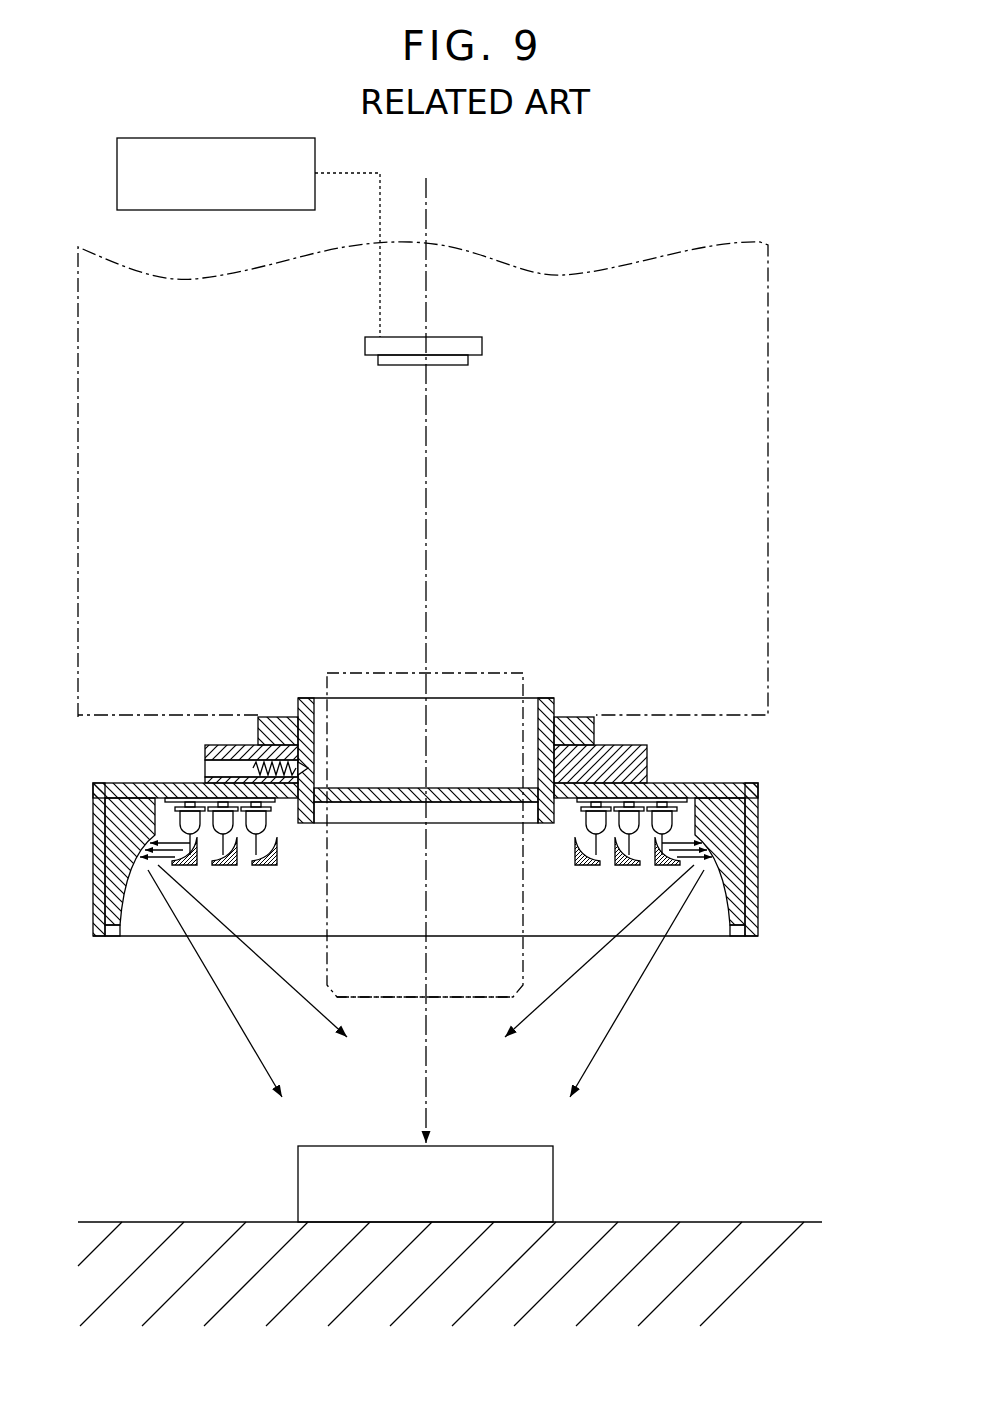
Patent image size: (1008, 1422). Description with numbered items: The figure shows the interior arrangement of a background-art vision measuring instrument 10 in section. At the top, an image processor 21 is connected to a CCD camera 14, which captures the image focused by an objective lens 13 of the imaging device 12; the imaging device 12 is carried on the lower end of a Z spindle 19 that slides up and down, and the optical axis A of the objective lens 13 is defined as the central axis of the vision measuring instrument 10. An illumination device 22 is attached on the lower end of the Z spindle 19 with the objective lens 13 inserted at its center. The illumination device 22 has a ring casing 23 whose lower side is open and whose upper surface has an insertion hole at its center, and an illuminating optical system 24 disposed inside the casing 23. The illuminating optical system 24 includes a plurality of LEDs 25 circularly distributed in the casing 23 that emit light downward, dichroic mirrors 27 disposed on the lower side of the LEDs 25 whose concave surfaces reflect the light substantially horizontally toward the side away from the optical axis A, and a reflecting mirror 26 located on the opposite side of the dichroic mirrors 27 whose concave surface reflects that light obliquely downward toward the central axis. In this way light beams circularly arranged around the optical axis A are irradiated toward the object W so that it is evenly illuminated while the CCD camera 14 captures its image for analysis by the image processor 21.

The vision measuring instrument 10 is at (486, 640).
The imaging device 12 is at (530, 648).
The objective lens 13 is at (487, 997).
The CCD camera 14 is at (482, 343).
The Z spindle 19 is at (768, 440).
The image processor 21 is at (212, 138).
The illumination device 22 is at (476, 897).
The ring casing 23 is at (752, 818).
The illuminating optical system 24 is at (426, 947).
The LEDs 25 is at (582, 818).
The reflecting mirror 26 is at (730, 900).
The dichroic mirrors 27 is at (618, 873).
The optical axis A is at (421, 643).
The object W is at (553, 1188).